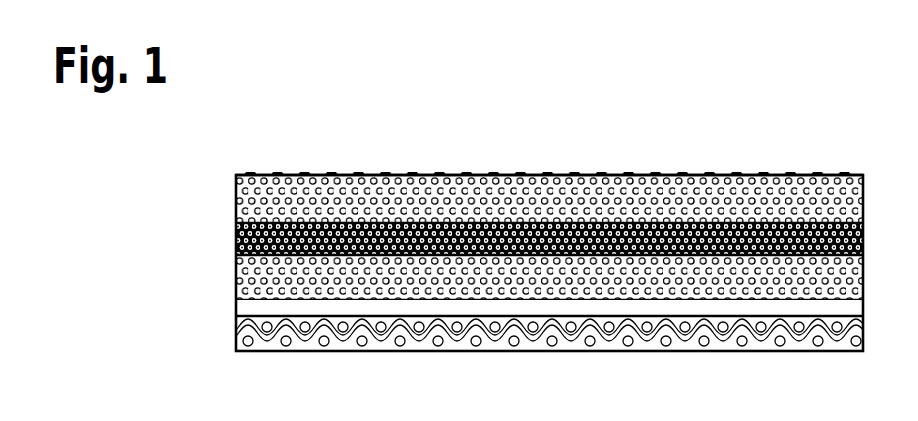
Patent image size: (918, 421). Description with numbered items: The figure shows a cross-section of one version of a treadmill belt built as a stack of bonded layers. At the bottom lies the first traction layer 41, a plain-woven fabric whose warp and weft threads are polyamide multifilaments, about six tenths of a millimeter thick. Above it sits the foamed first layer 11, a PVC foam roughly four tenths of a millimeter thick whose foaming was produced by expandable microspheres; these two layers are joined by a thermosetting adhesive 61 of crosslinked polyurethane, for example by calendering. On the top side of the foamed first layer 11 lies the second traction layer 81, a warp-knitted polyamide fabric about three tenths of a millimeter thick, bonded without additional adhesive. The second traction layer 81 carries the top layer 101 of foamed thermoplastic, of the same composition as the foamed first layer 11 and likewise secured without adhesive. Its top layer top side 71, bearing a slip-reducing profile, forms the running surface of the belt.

The top layer 101 is at (228, 183).
The second traction layer 81 is at (228, 229).
The foamed first layer 11 is at (228, 271).
The thermosetting adhesive 61 is at (228, 304).
The first traction layer 41 is at (228, 331).
The top layer top side 71 is at (484, 166).